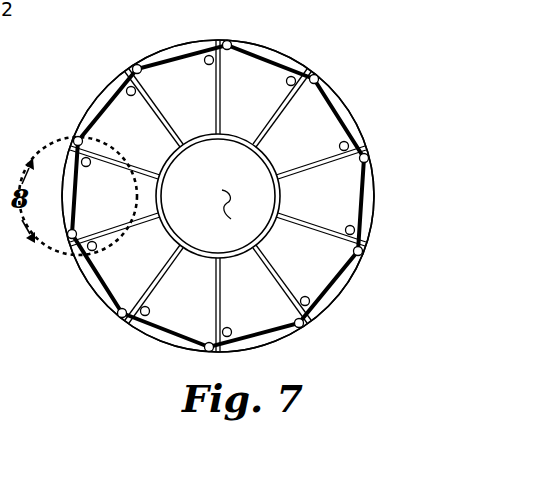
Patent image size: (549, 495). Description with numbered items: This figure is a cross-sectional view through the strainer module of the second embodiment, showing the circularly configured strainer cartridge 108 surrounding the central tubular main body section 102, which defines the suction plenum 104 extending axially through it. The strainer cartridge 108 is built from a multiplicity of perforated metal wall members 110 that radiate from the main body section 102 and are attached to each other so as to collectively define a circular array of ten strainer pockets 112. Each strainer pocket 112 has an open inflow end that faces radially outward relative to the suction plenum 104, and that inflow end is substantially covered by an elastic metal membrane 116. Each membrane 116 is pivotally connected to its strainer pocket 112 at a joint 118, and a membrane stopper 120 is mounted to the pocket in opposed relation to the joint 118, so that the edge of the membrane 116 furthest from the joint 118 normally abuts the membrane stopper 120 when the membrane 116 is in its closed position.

The main body section 102 is at (273, 170).
The suction plenum 104 is at (231, 203).
The strainer cartridge 108 is at (383, 261).
The wall members 110 is at (222, 93).
The strainer pockets 112 is at (170, 312).
The membrane 116 is at (98, 109).
The joint 118 is at (74, 138).
The membrane stopper 120 is at (325, 307).